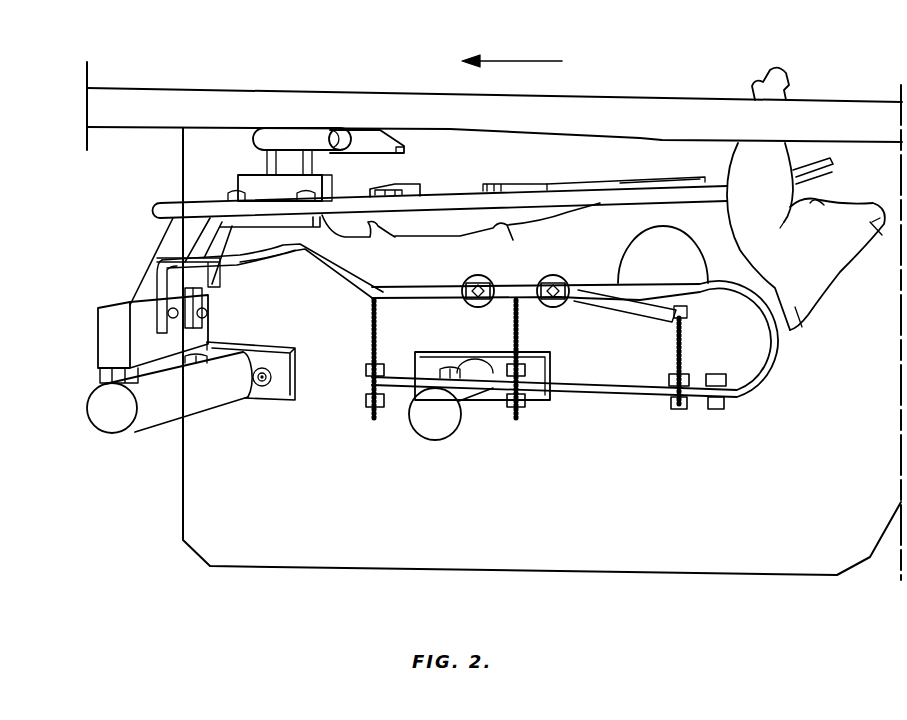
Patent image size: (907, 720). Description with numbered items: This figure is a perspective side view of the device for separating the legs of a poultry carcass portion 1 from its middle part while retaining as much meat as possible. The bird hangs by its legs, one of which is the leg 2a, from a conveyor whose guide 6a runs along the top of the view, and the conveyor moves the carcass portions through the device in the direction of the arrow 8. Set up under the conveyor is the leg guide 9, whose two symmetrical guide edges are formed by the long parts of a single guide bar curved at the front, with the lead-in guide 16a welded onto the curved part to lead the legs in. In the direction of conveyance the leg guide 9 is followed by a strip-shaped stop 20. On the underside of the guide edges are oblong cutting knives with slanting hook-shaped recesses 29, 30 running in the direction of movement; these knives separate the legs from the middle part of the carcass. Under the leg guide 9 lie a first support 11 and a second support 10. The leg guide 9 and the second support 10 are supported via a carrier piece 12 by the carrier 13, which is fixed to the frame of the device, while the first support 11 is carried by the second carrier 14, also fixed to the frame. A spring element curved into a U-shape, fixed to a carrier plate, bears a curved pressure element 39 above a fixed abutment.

The poultry carcass portion 1 is at (832, 267).
The leg 2a is at (790, 90).
The guide 6a is at (632, 102).
The arrow 8 is at (534, 60).
The leg guide 9 is at (510, 180).
The second support 10 is at (608, 408).
The first support 11 is at (309, 290).
The carrier piece 12 is at (104, 340).
The carrier 13 is at (148, 415).
The second carrier 14 is at (462, 412).
The lead-in guide 16a is at (832, 164).
The strip-shaped stop 20 is at (395, 186).
The hook-shaped recess 29 is at (512, 236).
The hook-shaped recess 30 is at (388, 233).
The curved pressure element 39 is at (626, 252).